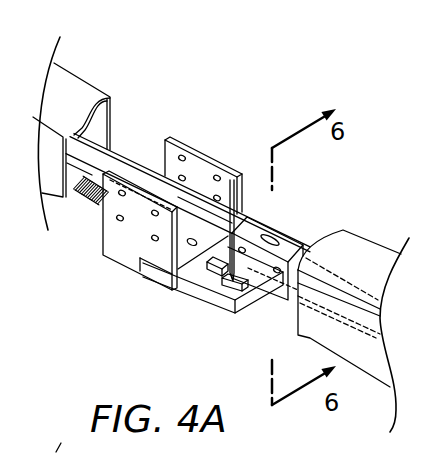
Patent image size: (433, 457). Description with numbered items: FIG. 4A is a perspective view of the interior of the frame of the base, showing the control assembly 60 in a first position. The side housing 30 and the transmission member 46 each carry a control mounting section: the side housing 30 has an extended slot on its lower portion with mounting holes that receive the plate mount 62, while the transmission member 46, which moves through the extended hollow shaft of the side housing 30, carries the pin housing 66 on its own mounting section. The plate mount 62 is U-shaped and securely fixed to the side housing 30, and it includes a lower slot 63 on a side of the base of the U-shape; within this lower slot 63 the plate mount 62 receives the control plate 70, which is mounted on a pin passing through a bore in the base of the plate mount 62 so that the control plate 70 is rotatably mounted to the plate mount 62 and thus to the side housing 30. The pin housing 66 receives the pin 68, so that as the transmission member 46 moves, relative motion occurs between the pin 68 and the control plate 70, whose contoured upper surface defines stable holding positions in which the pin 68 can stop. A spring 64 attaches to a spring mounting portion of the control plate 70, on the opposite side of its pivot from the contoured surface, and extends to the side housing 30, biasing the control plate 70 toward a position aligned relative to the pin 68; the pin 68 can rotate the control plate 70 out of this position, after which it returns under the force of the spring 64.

The side housing 30 is at (373, 253).
The transmission member 46 is at (134, 162).
The control assembly 60 is at (279, 90).
The plate mount 62 is at (203, 153).
The lower slot 63 is at (148, 276).
The spring 64 is at (84, 207).
The pin housing 66 is at (300, 237).
The pin 68 is at (267, 299).
The control plate 70 is at (197, 294).